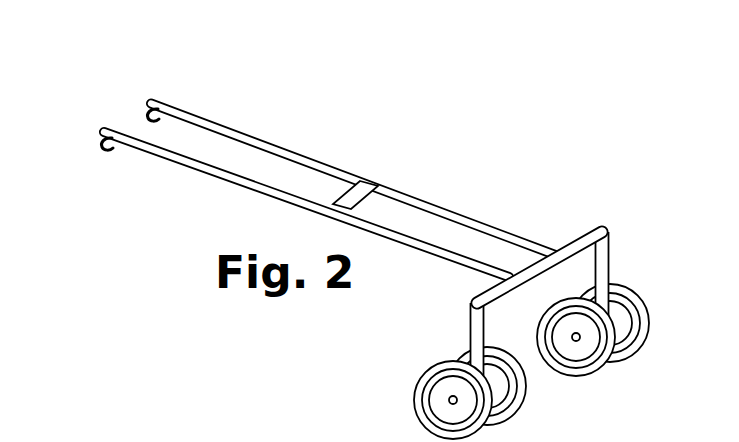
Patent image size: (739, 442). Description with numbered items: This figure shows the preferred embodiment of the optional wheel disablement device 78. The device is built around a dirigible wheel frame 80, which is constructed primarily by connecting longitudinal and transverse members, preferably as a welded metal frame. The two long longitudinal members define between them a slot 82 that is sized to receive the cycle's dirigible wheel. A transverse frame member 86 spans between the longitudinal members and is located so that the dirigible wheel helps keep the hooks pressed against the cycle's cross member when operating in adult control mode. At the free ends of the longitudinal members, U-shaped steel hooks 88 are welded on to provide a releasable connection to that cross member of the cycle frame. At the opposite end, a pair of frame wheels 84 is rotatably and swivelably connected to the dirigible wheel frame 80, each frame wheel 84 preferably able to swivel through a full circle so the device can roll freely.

The wheel disablement device 78 is at (178, 72).
The dirigible wheel frame 80 is at (331, 191).
The slot 82 is at (458, 230).
The frame wheel 84 is at (437, 398).
The transverse frame member 86 is at (356, 189).
The U-shaped steel hooks 88 is at (99, 146).